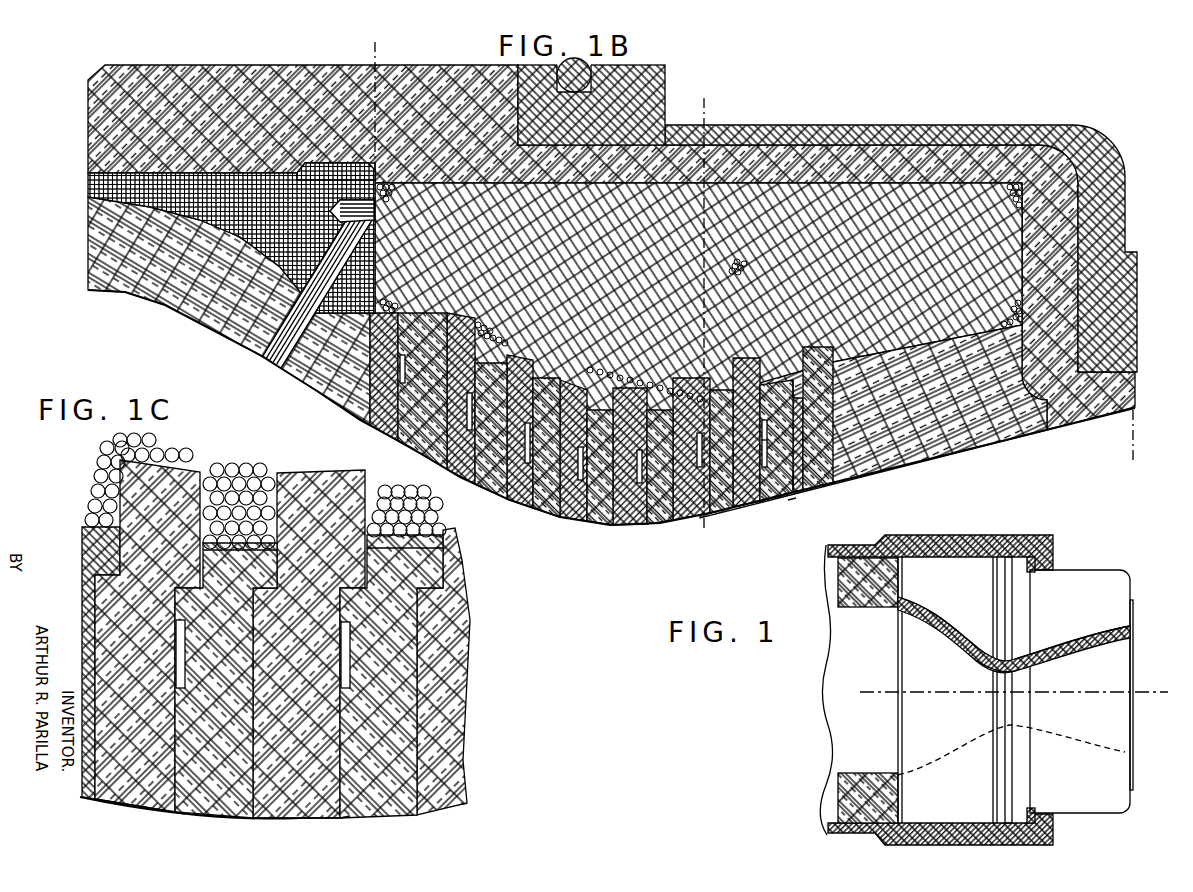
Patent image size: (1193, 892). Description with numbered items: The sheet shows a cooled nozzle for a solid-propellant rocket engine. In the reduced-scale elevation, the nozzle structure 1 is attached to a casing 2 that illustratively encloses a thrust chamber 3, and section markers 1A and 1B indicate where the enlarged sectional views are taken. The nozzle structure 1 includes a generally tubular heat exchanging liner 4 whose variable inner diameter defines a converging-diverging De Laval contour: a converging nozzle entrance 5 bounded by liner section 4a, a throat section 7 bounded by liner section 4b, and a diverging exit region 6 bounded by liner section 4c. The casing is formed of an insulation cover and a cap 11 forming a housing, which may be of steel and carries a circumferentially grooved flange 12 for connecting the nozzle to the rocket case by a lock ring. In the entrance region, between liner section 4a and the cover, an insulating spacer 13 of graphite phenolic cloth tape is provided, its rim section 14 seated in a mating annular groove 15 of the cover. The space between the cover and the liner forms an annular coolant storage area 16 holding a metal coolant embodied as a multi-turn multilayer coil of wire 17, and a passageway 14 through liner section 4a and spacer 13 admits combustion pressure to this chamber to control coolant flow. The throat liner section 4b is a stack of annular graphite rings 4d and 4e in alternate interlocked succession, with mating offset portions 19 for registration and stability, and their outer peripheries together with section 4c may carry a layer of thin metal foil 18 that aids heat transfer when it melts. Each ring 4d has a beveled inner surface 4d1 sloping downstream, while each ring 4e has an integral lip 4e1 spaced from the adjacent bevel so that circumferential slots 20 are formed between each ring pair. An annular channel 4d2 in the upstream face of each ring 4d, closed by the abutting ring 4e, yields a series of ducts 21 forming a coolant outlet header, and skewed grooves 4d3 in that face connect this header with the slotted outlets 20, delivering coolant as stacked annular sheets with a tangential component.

In FIG. 1B, the nozzle structure 1 is at (806, 113).
In FIG. 1, the nozzle structure 1 is at (1078, 567).
In FIG. 1B, the casing 2 is at (372, 50).
In FIG. 1, the casing 2 is at (925, 541).
In FIG. 1B, the thrust chamber 3 is at (706, 107).
In FIG. 1, the thrust chamber 3 is at (860, 767).
In FIG. 1B, the heat exchanging liner 4 is at (611, 383).
In FIG. 1, the heat exchanging liner 4 is at (1010, 667).
In FIG. 1B, the liner section 4a is at (174, 308).
In FIG. 1, the liner section 4a is at (926, 631).
In FIG. 1B, the liner section 4b is at (608, 534).
In FIG. 1C, the liner section 4b is at (490, 626).
In FIG. 1, the liner section 4b is at (966, 656).
In FIG. 1B, the liner section 4c is at (936, 458).
In FIG. 1, the liner section 4c is at (1086, 646).
In FIG. 1B, the annular graphite member 4d is at (792, 474).
In FIG. 1C, the annular graphite member 4d is at (225, 740).
In FIG. 1B, the beveled surface 4d1 is at (774, 501).
In FIG. 1B, the annular channel 4d2 is at (768, 434).
In FIG. 1C, the annular channel 4d2 is at (187, 660).
In FIG. 1B, the channels or grooves 4d3 is at (796, 466).
In FIG. 1B, the annular graphite member 4e is at (756, 474).
In FIG. 1C, the annular graphite member 4e is at (140, 740).
In FIG. 1B, the integral lip 4e1 is at (752, 509).
In FIG. 1C, the integral lip 4e1 is at (200, 815).
In FIG. 1, the nozzle entrance 5 is at (900, 628).
In FIG. 1, the exit region 6 is at (1118, 661).
In FIG. 1, the throat section 7 is at (1038, 683).
In FIG. 1B, the cap 11 is at (936, 140).
In FIG. 1B, the circumferentially grooved flange 12 is at (668, 78).
In FIG. 1B, the spacer 13 is at (90, 184).
In FIG. 1B, the rim section / passageway 14 is at (308, 166).
In FIG. 1B, the annular groove 15 is at (322, 162).
In FIG. 1B, the annular coolant storage area 16 is at (808, 186).
In FIG. 1B, the coil of wire 17 is at (655, 292).
In FIG. 1C, the coil of wire 17 is at (106, 438).
In FIG. 1B, the thin metal foil 18 is at (566, 394).
In FIG. 1B, the mating offset portions 19 is at (796, 400).
In FIG. 1B, the circumferential slots 20 is at (792, 503).
In FIG. 1C, the circumferential slots 20 is at (190, 815).
In FIG. 1B, the annular passageways or ducts 21 is at (768, 448).
In FIG. 1, the section view indicator 1A is at (868, 690).
In FIG. 1, the section view indicator 1B is at (868, 698).